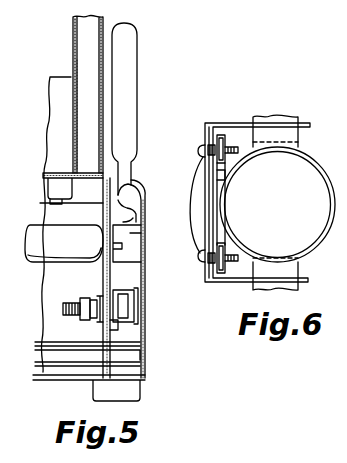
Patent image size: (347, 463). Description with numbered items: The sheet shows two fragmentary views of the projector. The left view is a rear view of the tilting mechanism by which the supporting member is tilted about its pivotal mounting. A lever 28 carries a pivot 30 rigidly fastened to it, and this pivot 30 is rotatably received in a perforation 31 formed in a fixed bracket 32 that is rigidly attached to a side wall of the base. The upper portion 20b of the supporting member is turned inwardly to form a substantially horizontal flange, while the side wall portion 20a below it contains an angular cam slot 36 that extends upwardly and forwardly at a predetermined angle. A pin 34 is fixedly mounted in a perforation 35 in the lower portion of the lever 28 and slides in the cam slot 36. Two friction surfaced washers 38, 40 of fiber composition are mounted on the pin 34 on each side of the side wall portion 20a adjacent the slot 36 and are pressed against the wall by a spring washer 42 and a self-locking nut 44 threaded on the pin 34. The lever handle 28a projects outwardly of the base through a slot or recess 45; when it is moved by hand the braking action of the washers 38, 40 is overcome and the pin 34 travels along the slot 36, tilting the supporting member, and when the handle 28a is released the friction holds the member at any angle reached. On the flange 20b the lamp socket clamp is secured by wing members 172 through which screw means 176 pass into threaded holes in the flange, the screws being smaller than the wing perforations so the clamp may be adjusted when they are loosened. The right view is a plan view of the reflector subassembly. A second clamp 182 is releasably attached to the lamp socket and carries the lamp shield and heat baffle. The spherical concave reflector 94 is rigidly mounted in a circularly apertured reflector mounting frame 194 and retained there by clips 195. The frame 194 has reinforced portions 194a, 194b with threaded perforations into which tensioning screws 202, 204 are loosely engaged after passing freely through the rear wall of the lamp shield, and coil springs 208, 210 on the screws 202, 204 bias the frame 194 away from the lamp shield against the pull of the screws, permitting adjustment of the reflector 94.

In FIG. 5, the side wall portion 20a is at (107, 335).
In FIG. 5, the upper portion 20b is at (89, 165).
In FIG. 5, the lever 28 is at (129, 220).
In FIG. 5, the lever handle 28a is at (139, 47).
In FIG. 5, the pivot 30 is at (141, 266).
In FIG. 5, the perforation 31 is at (110, 251).
In FIG. 5, the bracket 32 is at (136, 295).
In FIG. 5, the pin 34 is at (126, 315).
In FIG. 5, the perforation 35 is at (120, 328).
In FIG. 5, the angular cam slot 36 is at (100, 320).
In FIG. 5, the friction surfaced washer 38 is at (117, 296).
In FIG. 5, the friction surfaced washer 40 is at (107, 288).
In FIG. 5, the spring washer 42 is at (88, 312).
In FIG. 5, the self-locking nut 44 is at (82, 300).
In FIG. 5, the slot or recess 45 is at (129, 199).
In FIG. 5, the wing member 172 is at (74, 160).
In FIG. 5, the screw means 176 is at (45, 174).
In FIG. 6, the second clamp 182 is at (305, 250).
In FIG. 6, the spherical concave reflector 94 is at (204, 206).
In FIG. 6, the reflector mounting frame 194 is at (224, 195).
In FIG. 6, the reinforced portion 194a is at (222, 274).
In FIG. 6, the reinforced portion 194b is at (222, 135).
In FIG. 6, the clip 195 is at (225, 185).
In FIG. 6, the tensioning screw 202 is at (200, 264).
In FIG. 6, the tensioning screw 204 is at (203, 149).
In FIG. 6, the coil spring 208 is at (224, 245).
In FIG. 6, the coil spring 210 is at (212, 145).